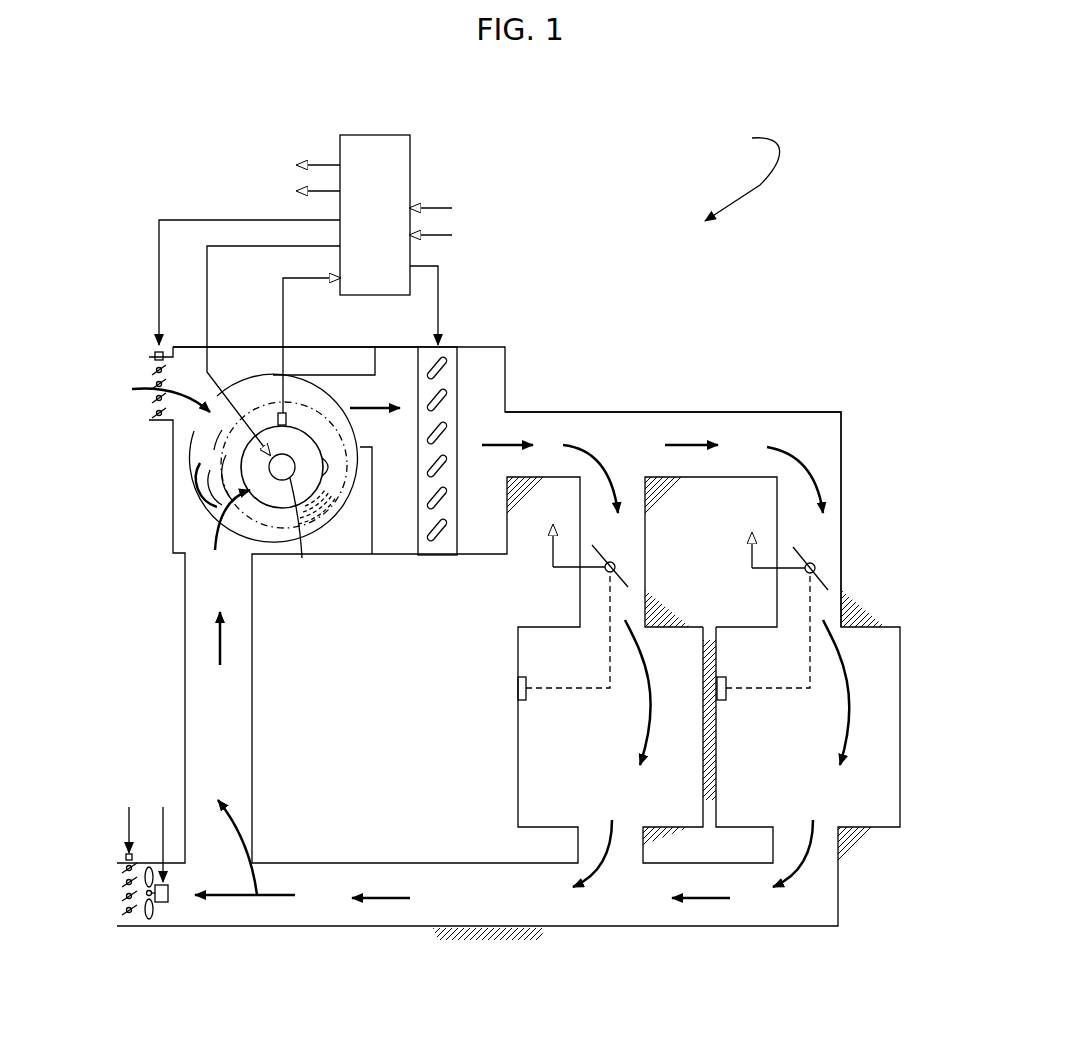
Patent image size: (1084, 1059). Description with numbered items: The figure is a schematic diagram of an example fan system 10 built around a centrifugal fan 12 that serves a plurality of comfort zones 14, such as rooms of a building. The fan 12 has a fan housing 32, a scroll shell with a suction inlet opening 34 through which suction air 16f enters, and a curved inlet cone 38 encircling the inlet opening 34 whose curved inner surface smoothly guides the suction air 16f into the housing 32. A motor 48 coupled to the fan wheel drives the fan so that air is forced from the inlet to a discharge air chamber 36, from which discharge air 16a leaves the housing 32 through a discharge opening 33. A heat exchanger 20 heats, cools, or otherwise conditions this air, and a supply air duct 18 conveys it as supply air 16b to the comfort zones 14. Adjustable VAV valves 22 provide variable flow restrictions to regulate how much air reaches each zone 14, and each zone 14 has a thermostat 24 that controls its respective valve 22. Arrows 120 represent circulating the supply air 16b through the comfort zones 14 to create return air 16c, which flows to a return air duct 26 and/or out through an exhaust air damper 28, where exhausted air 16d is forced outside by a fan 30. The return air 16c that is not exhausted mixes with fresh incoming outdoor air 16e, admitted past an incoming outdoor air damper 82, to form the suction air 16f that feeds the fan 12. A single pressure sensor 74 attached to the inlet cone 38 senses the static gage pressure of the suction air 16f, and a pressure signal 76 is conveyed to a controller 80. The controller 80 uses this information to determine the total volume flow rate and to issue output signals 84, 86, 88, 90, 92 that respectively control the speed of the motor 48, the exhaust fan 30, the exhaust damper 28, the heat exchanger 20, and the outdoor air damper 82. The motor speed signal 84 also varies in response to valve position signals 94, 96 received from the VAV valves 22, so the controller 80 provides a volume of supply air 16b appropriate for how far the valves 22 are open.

The fan system 10 is at (742, 178).
The centrifugal fan 12 is at (318, 515).
The comfort zones 14 is at (667, 670).
The discharge air 16a is at (362, 405).
The supply air 16b is at (490, 438).
The return air 16c is at (217, 532).
The exhausted air 16d is at (227, 900).
The fresh incoming outdoor air 16e is at (178, 427).
The suction air 16f is at (222, 465).
The supply air duct 18 is at (710, 412).
The heat exchanger 20 is at (460, 370).
The VAV valves 22 is at (596, 548).
The thermostat 24 is at (530, 683).
The return air duct 26 is at (257, 683).
The exhaust air damper 28 is at (128, 893).
The fan 30 is at (163, 905).
The fan housing 32 is at (340, 520).
The discharge opening 33 is at (385, 378).
The suction inlet opening 34 is at (322, 470).
The discharge air chamber 36 is at (360, 394).
The curved inlet cone 38 is at (247, 390).
The motor 48 is at (310, 541).
The pressure sensor 74 is at (288, 418).
The pressure signal 76 is at (305, 278).
The controller 80 is at (375, 215).
The incoming outdoor air damper 82 is at (155, 377).
The output signal 84 is at (207, 302).
The output signal 86 is at (322, 191).
The output signal 88 is at (322, 165).
The output signal 90 is at (438, 283).
The output signal 92 is at (159, 237).
The valve position signal 94 is at (440, 208).
The valve position signal 96 is at (440, 235).
The arrows 120 is at (660, 725).